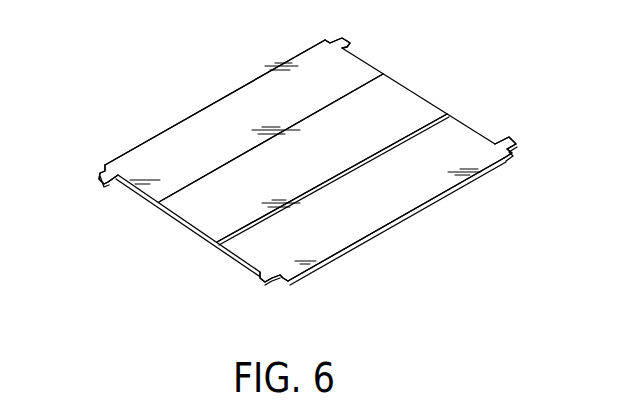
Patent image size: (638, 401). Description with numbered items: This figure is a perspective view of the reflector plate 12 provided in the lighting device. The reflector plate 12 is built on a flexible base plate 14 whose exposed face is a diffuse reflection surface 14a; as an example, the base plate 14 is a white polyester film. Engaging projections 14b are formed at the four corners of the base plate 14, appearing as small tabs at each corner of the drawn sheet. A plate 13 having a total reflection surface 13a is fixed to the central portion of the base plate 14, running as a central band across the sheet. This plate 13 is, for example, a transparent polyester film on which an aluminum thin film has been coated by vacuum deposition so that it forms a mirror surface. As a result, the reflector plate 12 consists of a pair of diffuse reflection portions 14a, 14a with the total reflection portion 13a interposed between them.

The reflector plate 12 is at (293, 167).
The plate 13 is at (188, 215).
The total reflection surface 13a is at (240, 212).
The flexible base plate 14 is at (322, 245).
The diffuse reflection surface 14a is at (243, 97).
The engaging projections 14b is at (342, 38).